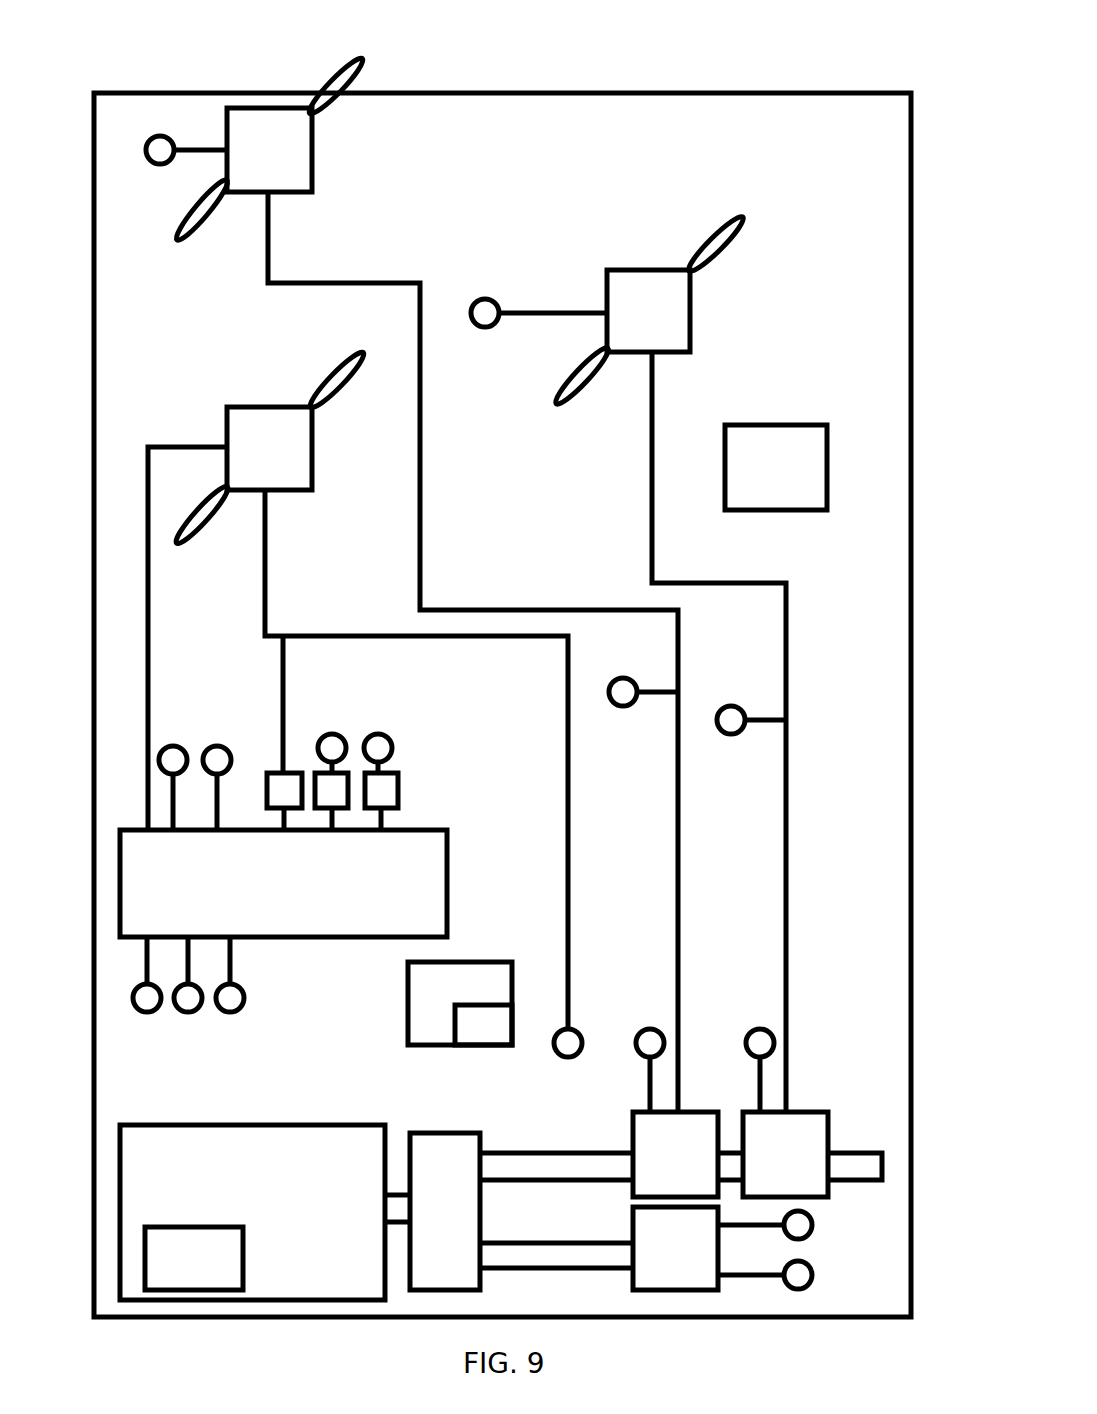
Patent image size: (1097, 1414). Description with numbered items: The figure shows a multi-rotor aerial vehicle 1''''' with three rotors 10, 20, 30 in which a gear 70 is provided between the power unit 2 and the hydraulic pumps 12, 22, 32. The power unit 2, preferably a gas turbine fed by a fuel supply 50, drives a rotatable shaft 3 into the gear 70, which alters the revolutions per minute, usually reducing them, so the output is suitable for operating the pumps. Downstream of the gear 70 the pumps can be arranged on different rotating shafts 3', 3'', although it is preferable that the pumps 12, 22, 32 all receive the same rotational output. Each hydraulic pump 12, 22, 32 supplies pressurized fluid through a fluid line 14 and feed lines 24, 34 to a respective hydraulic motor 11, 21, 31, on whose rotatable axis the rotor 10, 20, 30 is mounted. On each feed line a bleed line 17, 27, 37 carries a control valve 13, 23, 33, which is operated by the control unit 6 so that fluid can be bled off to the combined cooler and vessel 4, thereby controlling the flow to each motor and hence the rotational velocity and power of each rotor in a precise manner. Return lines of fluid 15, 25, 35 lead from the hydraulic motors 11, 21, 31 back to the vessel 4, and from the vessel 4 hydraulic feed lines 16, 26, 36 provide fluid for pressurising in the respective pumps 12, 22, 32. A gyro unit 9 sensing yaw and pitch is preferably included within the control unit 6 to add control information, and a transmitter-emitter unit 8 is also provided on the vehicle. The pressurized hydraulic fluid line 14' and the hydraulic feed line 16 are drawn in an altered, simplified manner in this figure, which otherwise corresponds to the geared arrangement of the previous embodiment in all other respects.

The multi-rotor aerial vehicle 1''''' is at (502, 670).
The power unit 2 is at (252, 1212).
The rotatable shaft 3 is at (395, 1153).
The rotating shaft 3' is at (855, 1104).
The rotating shaft 3'' is at (565, 1219).
The vessel 4 is at (283, 883).
The control unit 6 is at (460, 1003).
The transmitter-emitter unit 8 is at (776, 467).
The gyro unit 9 is at (483, 1025).
The rotor 10 is at (309, 389).
The hydraulic motor 11 is at (397, 718).
The hydraulic pump 12 is at (599, 1248).
The control valve 13 is at (285, 788).
The fluid line 14 is at (531, 838).
The pressurized hydraulic fluid line 14' is at (688, 1159).
The return line of fluid 15 is at (152, 633).
The hydraulic feed line 16 is at (150, 1012).
The bleed line 17 is at (280, 700).
The rotor 20 is at (324, 78).
The hydraulic motor 21 is at (452, 610).
The hydraulic pump 22 is at (599, 1154).
The control valve 23 is at (333, 787).
The feed line 24 is at (675, 987).
The return line of fluid 25 is at (164, 133).
The hydraulic feed line 26 is at (190, 1012).
The bleed line 27 is at (332, 734).
The rotor 30 is at (694, 249).
The hydraulic motor 31 is at (696, 691).
The hydraulic pump 32 is at (773, 1154).
The control valve 33 is at (381, 787).
The feed line 34 is at (783, 958).
The return line of fluid 35 is at (473, 299).
The hydraulic feed line 36 is at (245, 998).
The bleed line 37 is at (384, 737).
The fuel supply 50 is at (194, 1258).
The gear 70 is at (445, 1211).